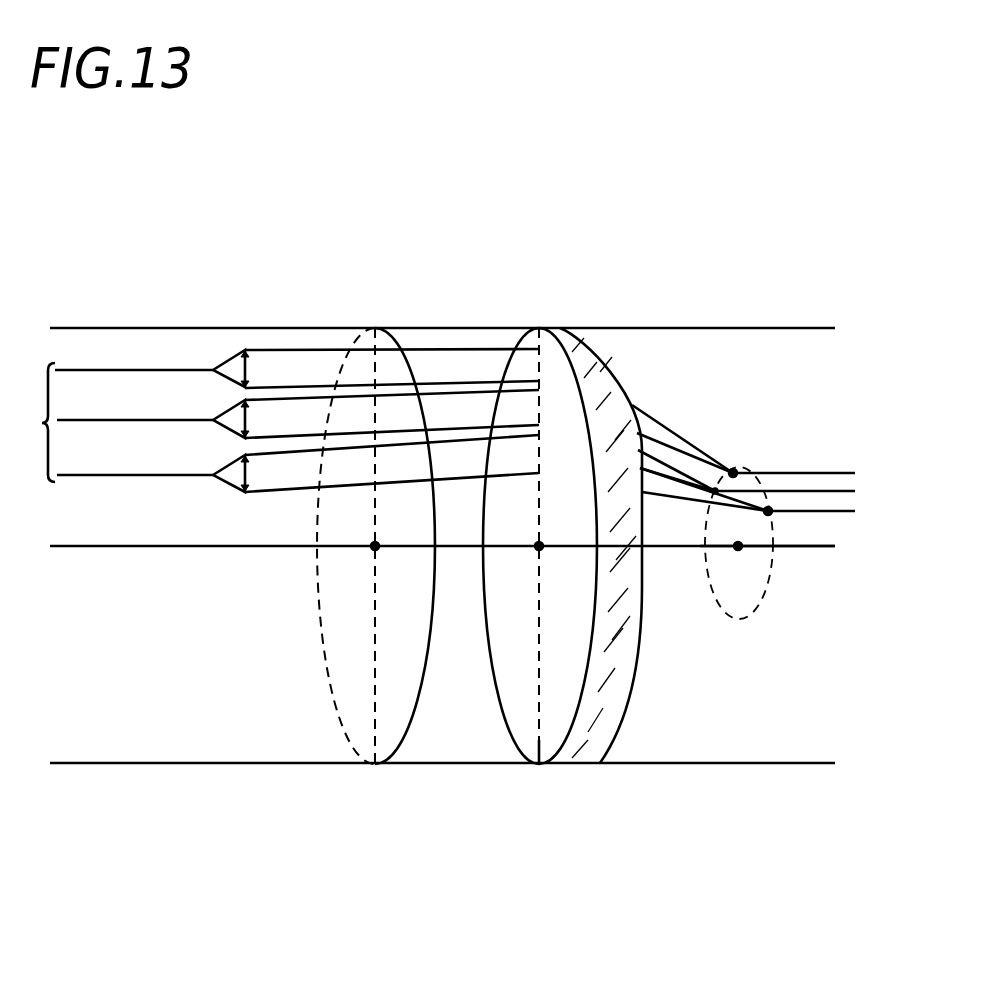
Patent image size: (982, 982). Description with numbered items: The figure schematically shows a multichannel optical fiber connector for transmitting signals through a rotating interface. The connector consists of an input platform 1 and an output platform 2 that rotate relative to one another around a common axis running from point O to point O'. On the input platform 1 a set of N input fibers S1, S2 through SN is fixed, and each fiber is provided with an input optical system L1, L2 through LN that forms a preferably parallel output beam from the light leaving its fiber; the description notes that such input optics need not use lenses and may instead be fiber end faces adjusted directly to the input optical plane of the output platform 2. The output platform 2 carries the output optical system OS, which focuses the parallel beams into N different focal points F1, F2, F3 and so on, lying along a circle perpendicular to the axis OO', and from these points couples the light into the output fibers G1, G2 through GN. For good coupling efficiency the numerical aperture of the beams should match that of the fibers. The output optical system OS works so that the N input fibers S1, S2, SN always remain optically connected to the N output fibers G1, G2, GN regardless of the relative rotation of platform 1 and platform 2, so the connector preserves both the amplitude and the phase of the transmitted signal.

The input platform 1 is at (274, 546).
The output platform 2 is at (646, 546).
The number of channels N is at (39, 422).
The first input fiber S1 is at (152, 362).
The second input fiber S2 is at (153, 412).
The N-th input fiber SN is at (153, 465).
The first input optical system L1 is at (489, 411).
The second input optical system L2 is at (480, 440).
The N-th input optical system LN is at (506, 473).
The axis point O is at (431, 548).
The axis point O' is at (785, 548).
The output optical system OS is at (545, 771).
The first focal point F1 is at (708, 478).
The second focal point F2 is at (745, 456).
The third focal point F3 is at (790, 497).
The first output fiber G1 is at (813, 465).
The second output fiber G2 is at (805, 491).
The N-th output fiber GN is at (830, 517).